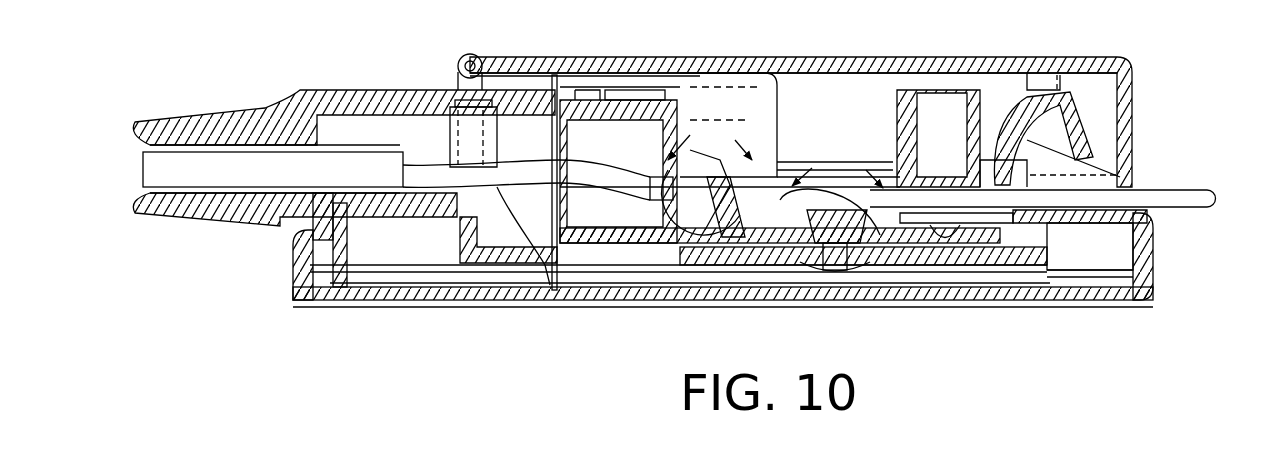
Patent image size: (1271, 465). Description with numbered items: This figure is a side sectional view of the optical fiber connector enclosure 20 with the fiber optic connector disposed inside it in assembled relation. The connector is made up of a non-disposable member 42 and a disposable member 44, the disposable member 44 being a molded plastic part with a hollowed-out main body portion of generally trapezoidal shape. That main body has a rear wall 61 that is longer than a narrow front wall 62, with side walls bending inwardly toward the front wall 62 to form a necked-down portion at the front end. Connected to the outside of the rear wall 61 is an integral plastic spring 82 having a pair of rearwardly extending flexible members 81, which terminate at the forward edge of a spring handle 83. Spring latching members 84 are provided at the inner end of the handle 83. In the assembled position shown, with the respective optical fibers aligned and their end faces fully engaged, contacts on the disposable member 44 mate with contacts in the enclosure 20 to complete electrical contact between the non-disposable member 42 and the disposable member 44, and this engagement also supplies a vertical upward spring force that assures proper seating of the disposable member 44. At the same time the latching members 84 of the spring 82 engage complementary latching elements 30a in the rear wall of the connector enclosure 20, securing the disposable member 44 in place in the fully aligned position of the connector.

The optical fiber connector enclosure 20 is at (413, 80).
The non-disposable member 42 is at (607, 100).
The disposable member 44 is at (797, 155).
The latching elements 30a is at (1030, 83).
The spring handle 83 is at (1080, 137).
The spring latching members 84 is at (1160, 207).
The front wall 62 is at (720, 222).
The rear wall 61 is at (920, 230).
The flexible members 81 is at (983, 217).
The integral plastic spring 82 is at (1070, 273).